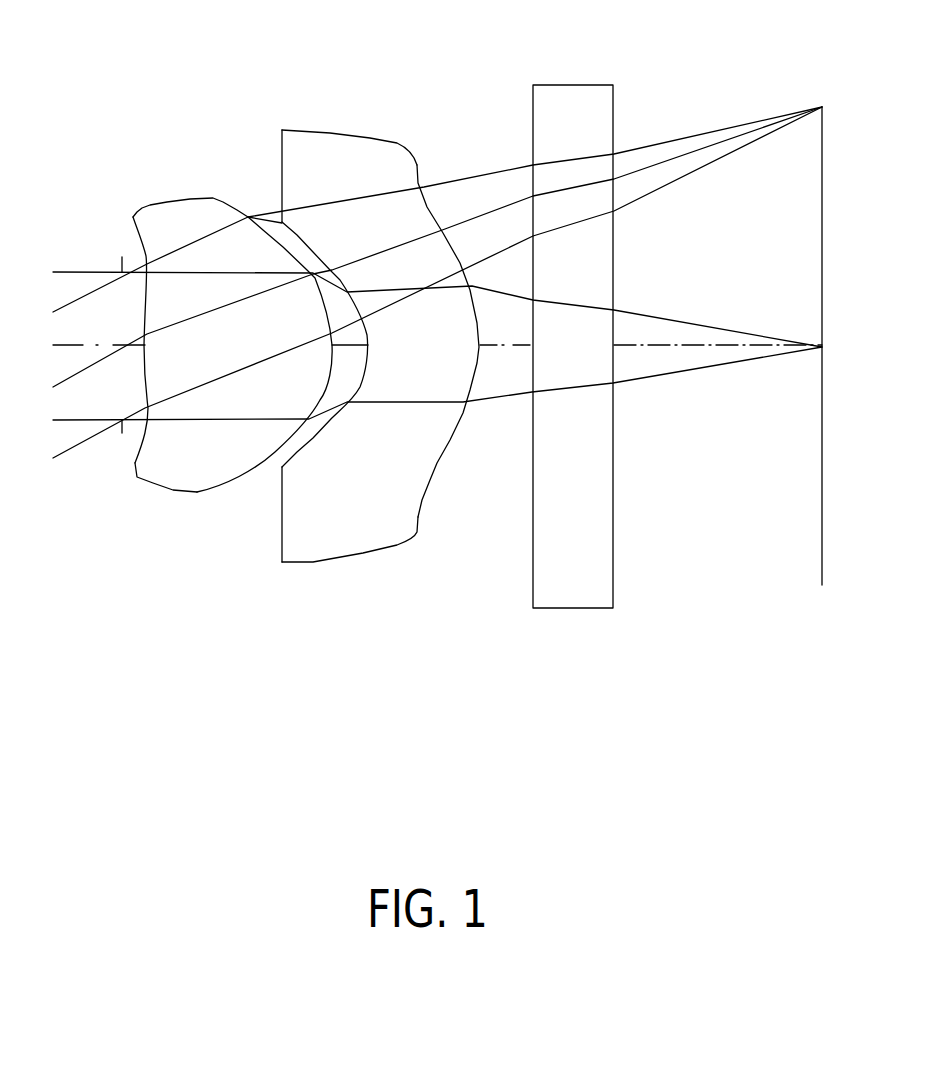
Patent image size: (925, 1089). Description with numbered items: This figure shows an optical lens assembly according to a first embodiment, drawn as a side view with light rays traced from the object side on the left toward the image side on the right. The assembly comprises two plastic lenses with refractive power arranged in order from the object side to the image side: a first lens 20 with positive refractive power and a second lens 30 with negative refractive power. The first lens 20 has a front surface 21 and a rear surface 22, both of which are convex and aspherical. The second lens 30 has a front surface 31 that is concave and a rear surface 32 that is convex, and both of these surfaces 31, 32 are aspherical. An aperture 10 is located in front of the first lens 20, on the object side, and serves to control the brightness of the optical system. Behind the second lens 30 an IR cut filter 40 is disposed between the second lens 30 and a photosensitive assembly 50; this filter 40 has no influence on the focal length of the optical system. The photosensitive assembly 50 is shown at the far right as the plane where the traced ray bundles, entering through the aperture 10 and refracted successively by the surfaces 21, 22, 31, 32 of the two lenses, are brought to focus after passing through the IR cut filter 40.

The aperture 10 is at (125, 422).
The first lens 20 is at (212, 366).
The front surface 21 is at (148, 245).
The rear surface 22 is at (248, 212).
The second lens 30 is at (385, 377).
The front surface 31 is at (318, 253).
The rear surface 32 is at (433, 210).
The IR cut filter 40 is at (577, 538).
The photosensitive assembly 50 is at (798, 550).